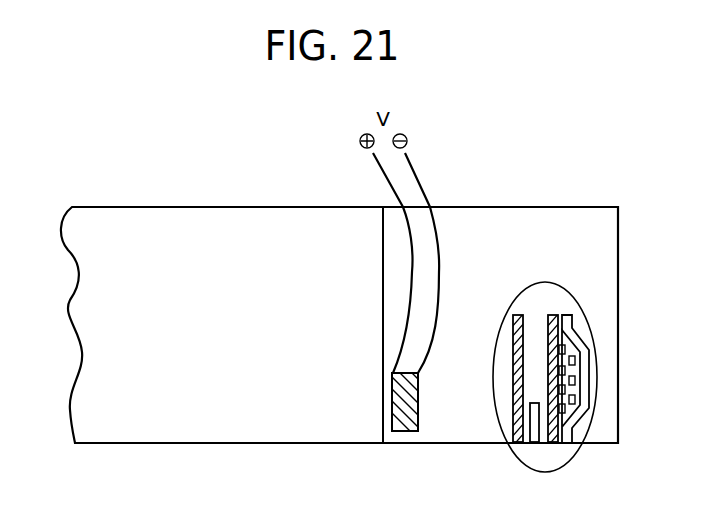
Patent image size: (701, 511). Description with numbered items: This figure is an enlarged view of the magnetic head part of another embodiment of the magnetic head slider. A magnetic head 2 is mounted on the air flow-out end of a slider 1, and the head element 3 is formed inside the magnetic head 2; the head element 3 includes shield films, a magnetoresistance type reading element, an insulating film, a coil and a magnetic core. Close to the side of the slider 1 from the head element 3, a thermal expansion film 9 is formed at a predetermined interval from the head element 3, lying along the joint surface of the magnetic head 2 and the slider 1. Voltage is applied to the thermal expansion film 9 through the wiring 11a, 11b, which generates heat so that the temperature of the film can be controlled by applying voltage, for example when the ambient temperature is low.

The slider 1 is at (148, 252).
The magnetic head 2 is at (397, 305).
The head element 3 is at (562, 287).
The thermal expansion film 9 is at (410, 402).
The wiring 11a is at (383, 173).
The wiring 11b is at (413, 163).